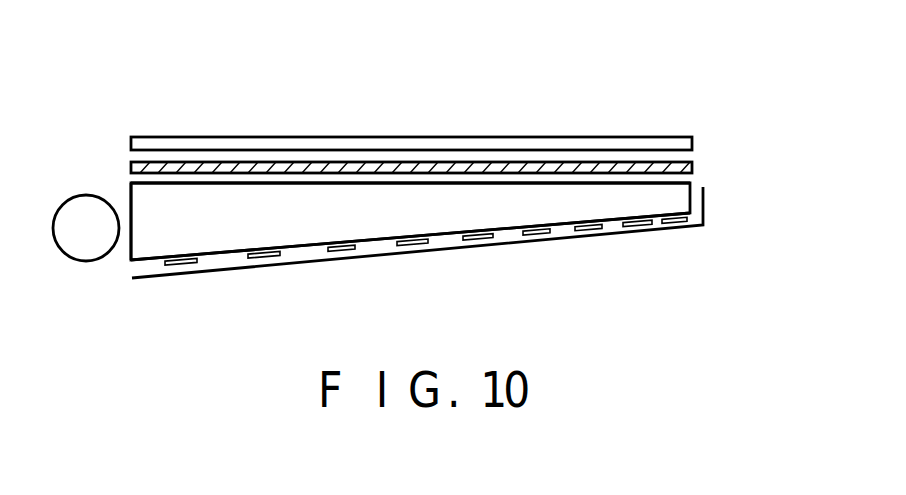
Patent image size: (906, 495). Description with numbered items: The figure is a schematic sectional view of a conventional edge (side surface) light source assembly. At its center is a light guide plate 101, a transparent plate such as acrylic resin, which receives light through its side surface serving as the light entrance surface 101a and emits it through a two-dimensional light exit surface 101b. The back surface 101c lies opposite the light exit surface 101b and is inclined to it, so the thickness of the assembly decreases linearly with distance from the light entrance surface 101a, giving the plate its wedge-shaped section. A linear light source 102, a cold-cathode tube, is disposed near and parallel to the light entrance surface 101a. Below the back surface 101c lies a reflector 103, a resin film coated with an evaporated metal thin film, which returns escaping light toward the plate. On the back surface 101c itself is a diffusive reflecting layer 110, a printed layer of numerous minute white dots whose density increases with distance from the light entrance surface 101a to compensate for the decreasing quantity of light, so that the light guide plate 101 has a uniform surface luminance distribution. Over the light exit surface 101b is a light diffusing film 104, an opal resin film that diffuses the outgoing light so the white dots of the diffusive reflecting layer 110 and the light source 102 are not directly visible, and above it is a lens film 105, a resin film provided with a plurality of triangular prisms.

The light guide plate 101 is at (355, 208).
The light entrance surface 101a is at (131, 197).
The light exit surface 101b is at (177, 185).
The back surface 101c is at (219, 256).
The linear light source 102 is at (90, 250).
The reflector 103 is at (623, 233).
The light diffusing film 104 is at (693, 168).
The lens film 105 is at (693, 144).
The diffusive reflecting layer 110 is at (678, 218).